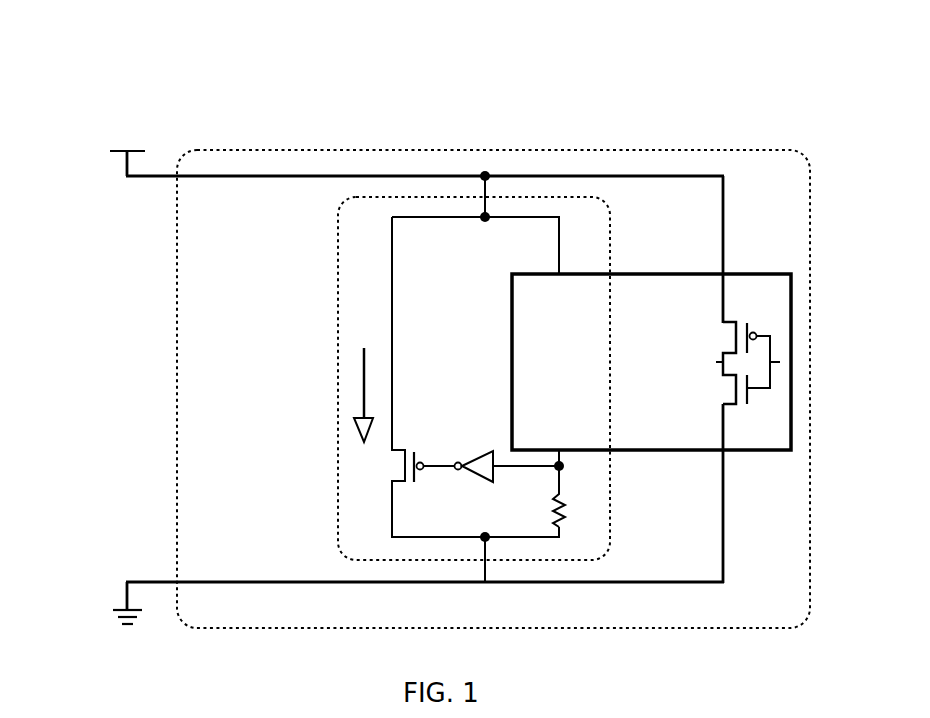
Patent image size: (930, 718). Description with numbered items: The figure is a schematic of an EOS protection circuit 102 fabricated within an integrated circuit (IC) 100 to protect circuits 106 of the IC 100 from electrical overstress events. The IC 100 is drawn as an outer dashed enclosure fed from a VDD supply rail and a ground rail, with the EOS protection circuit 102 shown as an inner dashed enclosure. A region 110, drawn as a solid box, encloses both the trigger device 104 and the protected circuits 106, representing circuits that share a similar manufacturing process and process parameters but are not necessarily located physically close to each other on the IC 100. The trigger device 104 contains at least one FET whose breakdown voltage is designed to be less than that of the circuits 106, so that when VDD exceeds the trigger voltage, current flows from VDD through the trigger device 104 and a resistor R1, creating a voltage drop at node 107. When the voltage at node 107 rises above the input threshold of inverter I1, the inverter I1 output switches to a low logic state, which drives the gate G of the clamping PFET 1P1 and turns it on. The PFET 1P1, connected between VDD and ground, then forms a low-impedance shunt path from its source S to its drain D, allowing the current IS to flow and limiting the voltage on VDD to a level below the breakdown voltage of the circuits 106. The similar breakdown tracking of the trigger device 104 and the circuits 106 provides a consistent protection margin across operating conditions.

The integrated circuit (IC) 100 is at (148, 70).
The EOS protection circuit 102 is at (300, 284).
The trigger device 104 is at (557, 339).
The circuits 106 is at (684, 348).
The node 107 is at (542, 468).
The region 110 is at (628, 272).
The clamping device (PFET) 1P1 is at (399, 468).
The inverter I1 is at (482, 455).
The resistor R1 is at (567, 516).